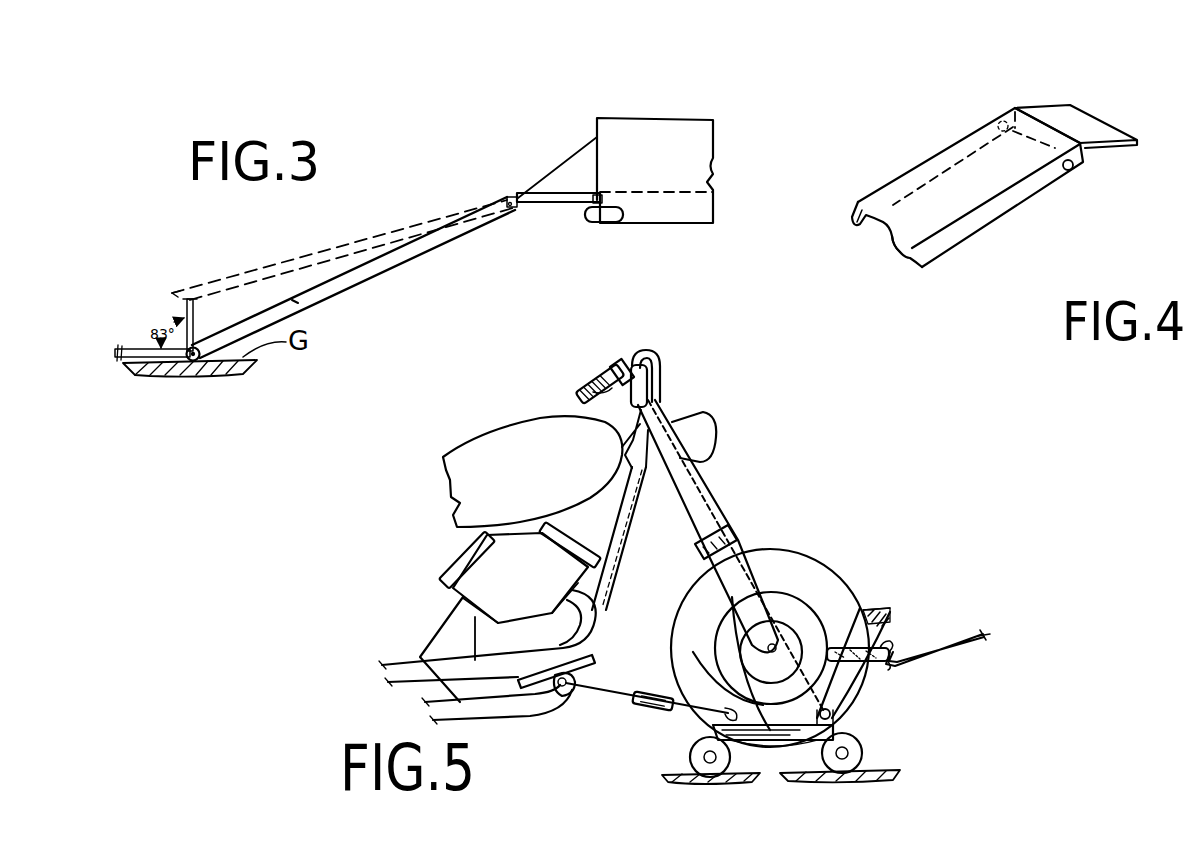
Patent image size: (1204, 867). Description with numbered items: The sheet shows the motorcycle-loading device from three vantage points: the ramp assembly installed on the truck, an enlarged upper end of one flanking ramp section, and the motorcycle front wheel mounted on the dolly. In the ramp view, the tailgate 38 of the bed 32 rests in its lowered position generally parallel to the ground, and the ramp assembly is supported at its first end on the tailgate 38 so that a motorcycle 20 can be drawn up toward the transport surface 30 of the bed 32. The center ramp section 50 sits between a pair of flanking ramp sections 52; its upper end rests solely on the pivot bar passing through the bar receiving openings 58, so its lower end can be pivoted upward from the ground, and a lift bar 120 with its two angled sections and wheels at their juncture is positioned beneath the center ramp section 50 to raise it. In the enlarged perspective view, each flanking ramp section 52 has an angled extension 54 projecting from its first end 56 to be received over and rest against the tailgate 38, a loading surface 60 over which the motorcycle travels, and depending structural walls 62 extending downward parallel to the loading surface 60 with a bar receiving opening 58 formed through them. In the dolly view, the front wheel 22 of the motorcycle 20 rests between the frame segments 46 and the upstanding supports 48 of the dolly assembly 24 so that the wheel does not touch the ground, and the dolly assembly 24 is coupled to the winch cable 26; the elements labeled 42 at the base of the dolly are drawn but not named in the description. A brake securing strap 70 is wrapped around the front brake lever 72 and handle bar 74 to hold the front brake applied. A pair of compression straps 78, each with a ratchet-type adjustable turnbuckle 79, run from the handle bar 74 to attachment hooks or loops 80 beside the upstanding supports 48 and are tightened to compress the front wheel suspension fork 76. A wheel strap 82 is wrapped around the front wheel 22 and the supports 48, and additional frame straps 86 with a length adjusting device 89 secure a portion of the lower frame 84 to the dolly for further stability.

In FIG. 5, the motorcycle 20 is at (772, 411).
In FIG. 5, the front wheel 22 is at (815, 572).
In FIG. 5, the dolly assembly 24 is at (897, 598).
In FIG. 5, the winch cable 26 is at (925, 652).
In FIG. 3, the transport surface 30 is at (573, 195).
In FIG. 3, the bed 32 is at (665, 118).
In FIG. 3, the tailgate 38 is at (550, 200).
In FIG. 5, the caster wheels 42 is at (692, 757).
In FIG. 5, the frame segments 46 is at (768, 730).
In FIG. 5, the upstanding supports 48 is at (895, 620).
In FIG. 3, the center ramp section 50 is at (345, 240).
In FIG. 4, the flanking ramp sections 52 is at (1003, 100).
In FIG. 4, the angled extension 54 is at (1080, 125).
In FIG. 4, the first ends 56 is at (1036, 118).
In FIG. 4, the bar receiving opening 58 is at (998, 122).
In FIG. 3, the loading surface 60 is at (293, 304).
In FIG. 4, the loading surface 60 is at (897, 222).
In FIG. 4, the depending structural walls 62 is at (852, 230).
In FIG. 5, the brake securing strap 70 is at (612, 372).
In FIG. 5, the front brake lever 72 is at (656, 397).
In FIG. 5, the handle bar 74 is at (583, 381).
In FIG. 5, the front wheel suspension fork 76 is at (692, 508).
In FIG. 5, the compression straps 78 is at (700, 473).
In FIG. 5, the ratchet-type adjustable turnbuckle 79 is at (700, 545).
In FIG. 5, the attachment hooks or loops 80 is at (836, 714).
In FIG. 5, the wheel straps 82 is at (846, 620).
In FIG. 5, the frame 84 is at (420, 657).
In FIG. 5, the frame straps 86 is at (618, 688).
In FIG. 5, the length adjusting device 89 is at (640, 708).
In FIG. 3, the lift bar 120 is at (143, 343).